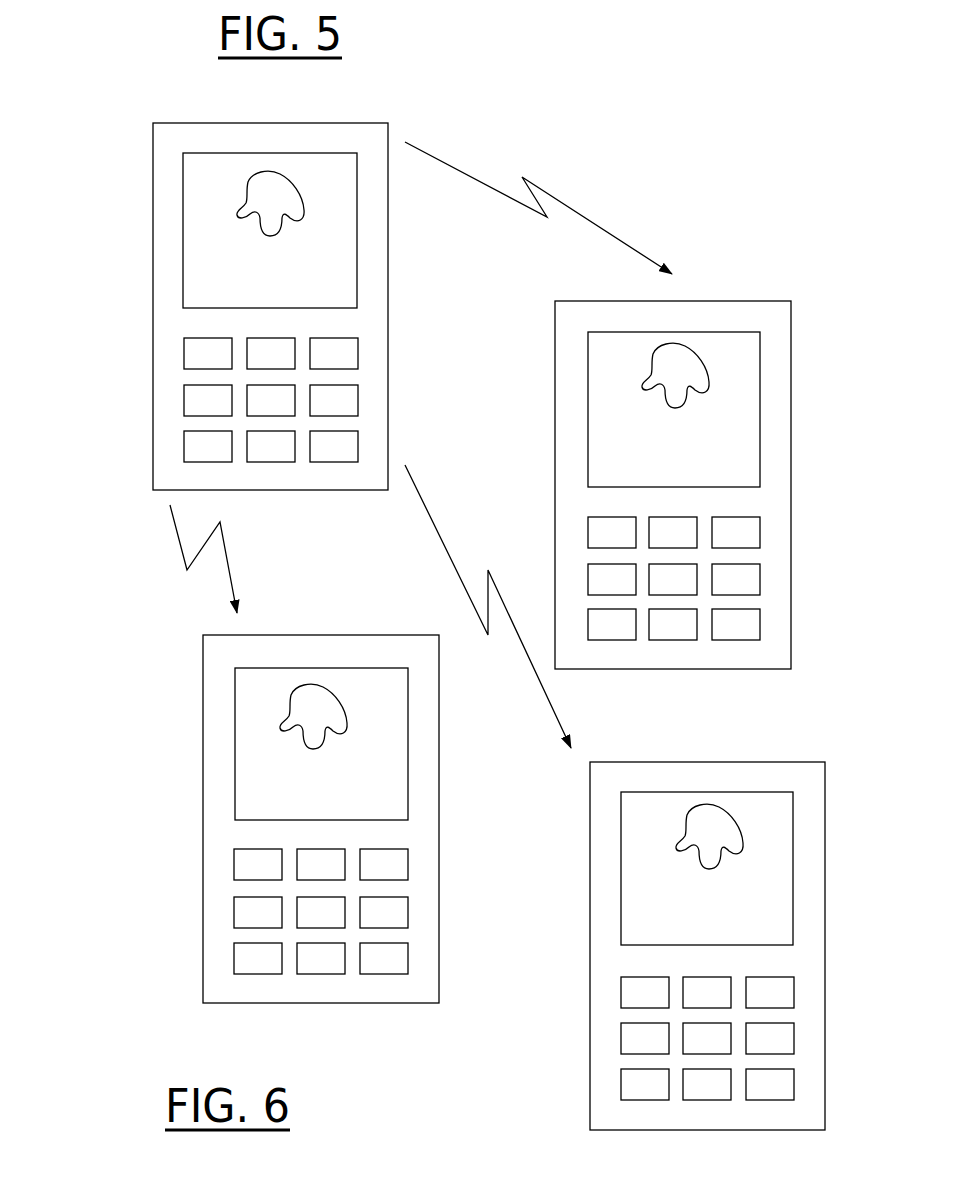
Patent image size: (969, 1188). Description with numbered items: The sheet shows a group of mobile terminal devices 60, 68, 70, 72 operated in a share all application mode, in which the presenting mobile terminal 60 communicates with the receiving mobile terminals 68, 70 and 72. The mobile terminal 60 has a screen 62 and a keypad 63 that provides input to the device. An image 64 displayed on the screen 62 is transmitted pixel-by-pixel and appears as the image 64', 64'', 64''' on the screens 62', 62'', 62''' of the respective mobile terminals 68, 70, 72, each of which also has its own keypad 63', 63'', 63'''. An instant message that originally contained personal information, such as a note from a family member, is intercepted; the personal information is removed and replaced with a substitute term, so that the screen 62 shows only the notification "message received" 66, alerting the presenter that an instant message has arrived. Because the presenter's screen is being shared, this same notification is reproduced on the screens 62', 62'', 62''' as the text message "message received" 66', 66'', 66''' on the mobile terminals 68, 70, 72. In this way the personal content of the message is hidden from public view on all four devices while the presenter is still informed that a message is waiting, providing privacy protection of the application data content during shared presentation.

In FIG. 5, the mobile terminal device 60 is at (356, 102).
In FIG. 5, the screen 62 is at (321, 230).
In FIG. 5, the keypad 63 is at (325, 400).
In FIG. 5, the image 64 is at (173, 191).
In FIG. 5, the message received notification 66 is at (182, 285).
In FIG. 5, the mobile terminal 68 is at (726, 288).
In FIG. 5, the screen 62' is at (722, 409).
In FIG. 5, the keypad 63' is at (730, 567).
In FIG. 5, the image 64' is at (749, 352).
In FIG. 5, the message received text 66' is at (755, 442).
In FIG. 6, the mobile terminal 70 is at (306, 633).
In FIG. 6, the screen 62'' is at (265, 744).
In FIG. 6, the keypad 63'' is at (385, 889).
In FIG. 6, the image 64'' is at (230, 706).
In FIG. 6, the message received text 66'' is at (250, 799).
In FIG. 6, the mobile terminal 72 is at (760, 748).
In FIG. 6, the screen 62''' is at (750, 868).
In FIG. 6, the keypad 63''' is at (650, 1038).
In FIG. 6, the image 64''' is at (793, 836).
In FIG. 6, the message received text 66''' is at (636, 917).